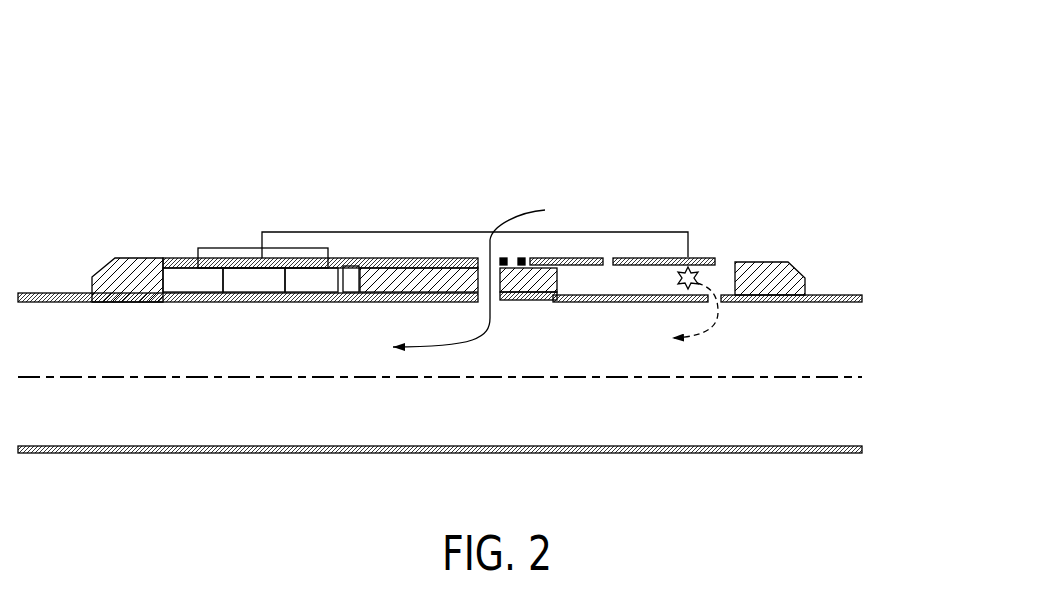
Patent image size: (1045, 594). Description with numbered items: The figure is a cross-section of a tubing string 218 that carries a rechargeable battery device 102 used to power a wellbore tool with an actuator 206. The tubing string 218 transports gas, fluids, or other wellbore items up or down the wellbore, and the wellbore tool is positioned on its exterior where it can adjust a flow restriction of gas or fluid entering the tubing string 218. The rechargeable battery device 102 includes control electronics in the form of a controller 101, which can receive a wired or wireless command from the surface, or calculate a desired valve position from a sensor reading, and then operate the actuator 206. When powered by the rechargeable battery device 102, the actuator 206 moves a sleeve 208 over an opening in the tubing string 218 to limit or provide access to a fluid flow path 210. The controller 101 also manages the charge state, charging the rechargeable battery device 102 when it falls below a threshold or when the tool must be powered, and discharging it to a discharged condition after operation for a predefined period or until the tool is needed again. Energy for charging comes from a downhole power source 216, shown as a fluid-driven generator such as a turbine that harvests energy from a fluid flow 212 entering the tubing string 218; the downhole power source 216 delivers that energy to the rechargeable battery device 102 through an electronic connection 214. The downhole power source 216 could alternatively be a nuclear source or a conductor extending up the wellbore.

The rechargeable battery device 102 is at (101, 104).
The controller 101 is at (163, 261).
The actuator 206 is at (302, 265).
The sleeve 208 is at (442, 265).
The fluid flow path 210 is at (484, 270).
The fluid flow 212 is at (678, 283).
The electronic connection 214 is at (698, 235).
The downhole power source 216 is at (728, 272).
The tubing string 218 is at (833, 413).